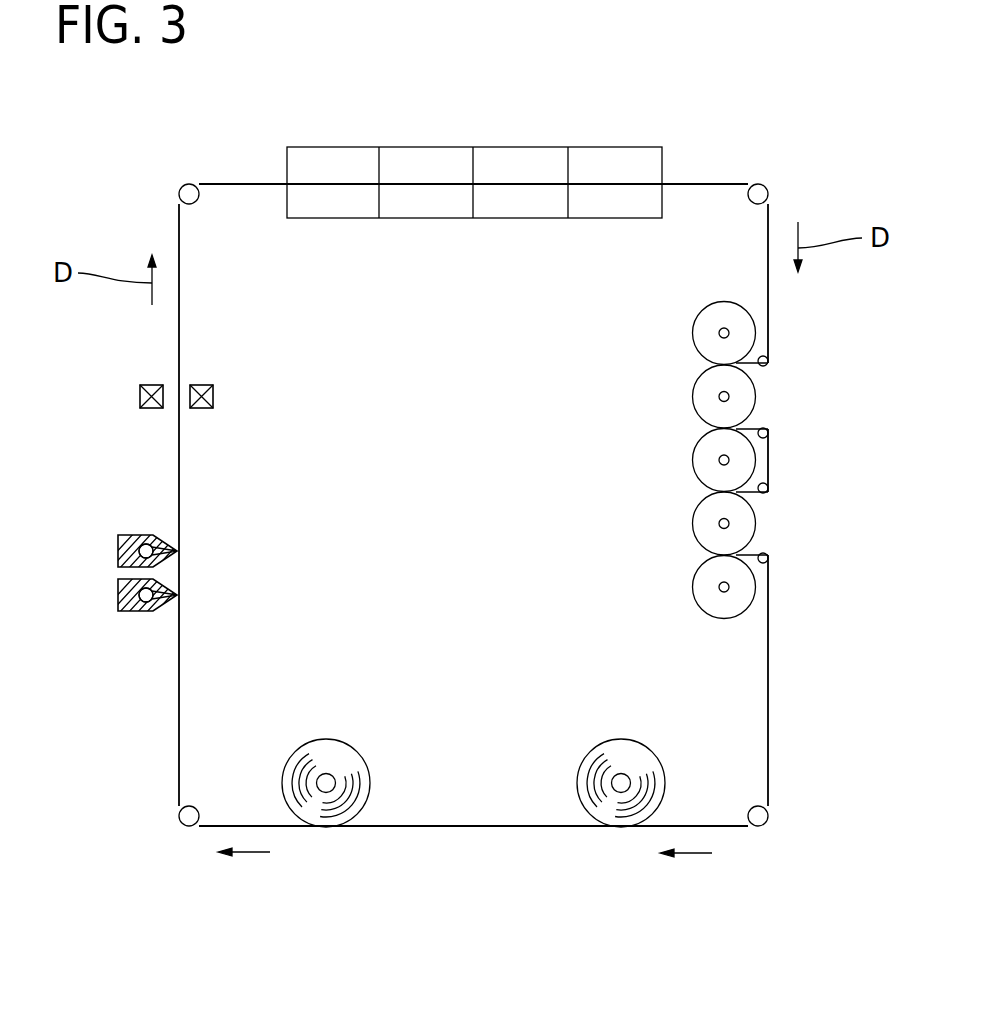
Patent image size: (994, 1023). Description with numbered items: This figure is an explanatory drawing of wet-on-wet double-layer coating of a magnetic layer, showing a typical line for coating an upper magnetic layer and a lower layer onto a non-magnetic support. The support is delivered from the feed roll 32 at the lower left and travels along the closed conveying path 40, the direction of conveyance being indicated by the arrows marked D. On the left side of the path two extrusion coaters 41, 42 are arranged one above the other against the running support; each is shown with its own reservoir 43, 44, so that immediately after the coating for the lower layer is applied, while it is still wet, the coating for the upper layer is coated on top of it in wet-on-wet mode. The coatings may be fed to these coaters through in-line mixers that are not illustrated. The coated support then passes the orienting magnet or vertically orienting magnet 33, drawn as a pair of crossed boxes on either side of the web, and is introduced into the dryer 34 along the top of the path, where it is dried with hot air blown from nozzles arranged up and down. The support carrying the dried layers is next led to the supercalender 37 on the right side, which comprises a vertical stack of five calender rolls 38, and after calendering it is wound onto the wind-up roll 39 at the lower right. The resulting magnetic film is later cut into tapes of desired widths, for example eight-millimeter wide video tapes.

The feed roll 32 is at (326, 773).
The orienting magnet 33 is at (213, 397).
The dryer 34 is at (459, 230).
The supercalender 37 is at (658, 460).
The calender rolls 38 is at (700, 333).
The wind-up roll 39 is at (621, 773).
The web 40 is at (179, 662).
The lower nozzle head 41 is at (118, 596).
The upper nozzle head 42 is at (118, 555).
The lower nozzle orifice 43 is at (148, 612).
The upper nozzle orifice 44 is at (148, 538).